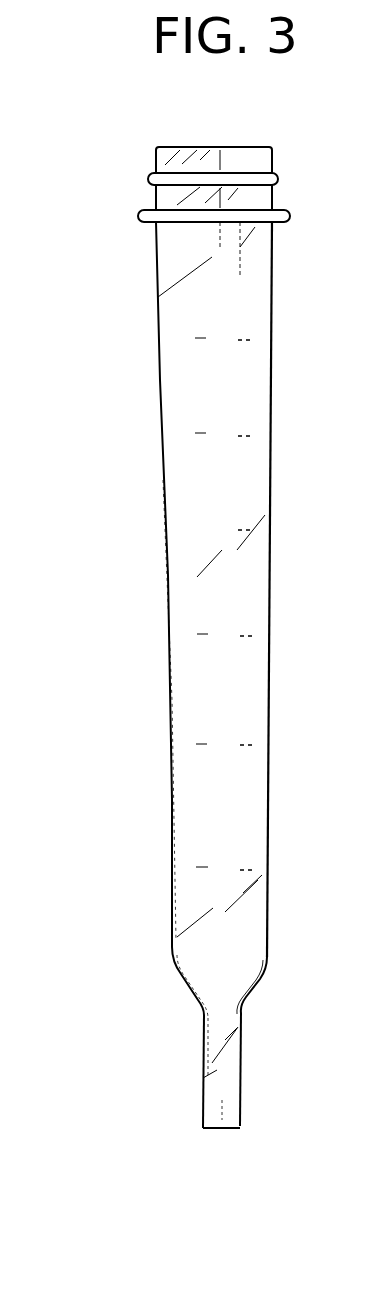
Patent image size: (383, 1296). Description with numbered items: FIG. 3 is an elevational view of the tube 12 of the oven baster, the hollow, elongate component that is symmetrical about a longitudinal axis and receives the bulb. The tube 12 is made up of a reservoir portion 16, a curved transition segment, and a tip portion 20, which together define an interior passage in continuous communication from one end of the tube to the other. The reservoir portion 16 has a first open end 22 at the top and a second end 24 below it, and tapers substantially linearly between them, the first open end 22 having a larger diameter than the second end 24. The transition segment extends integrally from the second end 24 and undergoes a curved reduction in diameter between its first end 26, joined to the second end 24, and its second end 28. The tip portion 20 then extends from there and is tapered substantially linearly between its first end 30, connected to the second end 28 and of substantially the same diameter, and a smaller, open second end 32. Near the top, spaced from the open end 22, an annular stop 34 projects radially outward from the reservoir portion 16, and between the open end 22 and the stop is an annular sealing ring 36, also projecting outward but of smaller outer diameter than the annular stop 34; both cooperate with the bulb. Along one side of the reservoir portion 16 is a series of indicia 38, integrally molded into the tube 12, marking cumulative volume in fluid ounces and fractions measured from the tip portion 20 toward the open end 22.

The tube 12 is at (139, 556).
The reservoir portion 16 is at (271, 568).
The tip portion 20 is at (218, 1081).
The first open end 22 is at (267, 148).
The second end 24 is at (172, 951).
The first end 26 is at (266, 962).
The second end 28 is at (199, 1012).
The first end 30 is at (244, 1017).
The second open end 32 is at (240, 1126).
The annular stop 34 is at (290, 216).
The annular sealing ring 36 is at (151, 180).
The indicia 38 is at (177, 341).